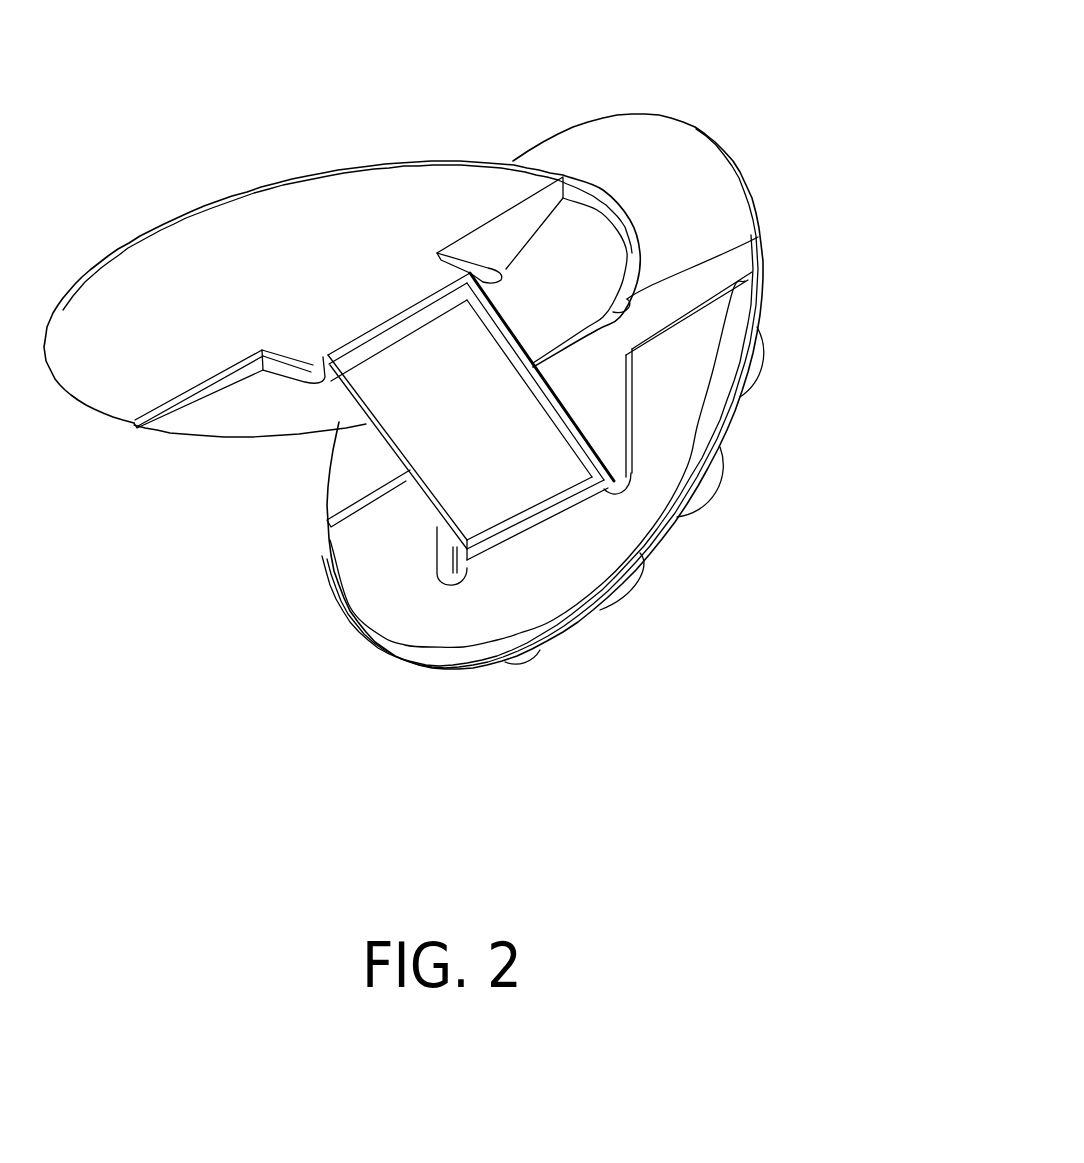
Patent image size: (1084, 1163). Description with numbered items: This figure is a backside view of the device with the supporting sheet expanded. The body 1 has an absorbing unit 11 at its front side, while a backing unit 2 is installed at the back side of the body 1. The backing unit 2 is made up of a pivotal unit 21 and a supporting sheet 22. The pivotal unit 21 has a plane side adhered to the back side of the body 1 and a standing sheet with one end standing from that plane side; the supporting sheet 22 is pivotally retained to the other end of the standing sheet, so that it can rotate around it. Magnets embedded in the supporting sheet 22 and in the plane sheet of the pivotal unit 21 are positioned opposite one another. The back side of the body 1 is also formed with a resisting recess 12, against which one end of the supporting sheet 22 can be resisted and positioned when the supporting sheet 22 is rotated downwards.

The body 1 is at (705, 118).
The absorbing unit 11 is at (763, 356).
The resisting recess 12 is at (758, 237).
The backing unit 2 is at (172, 447).
The pivotal unit 21 is at (430, 447).
The supporting sheet 22 is at (317, 170).